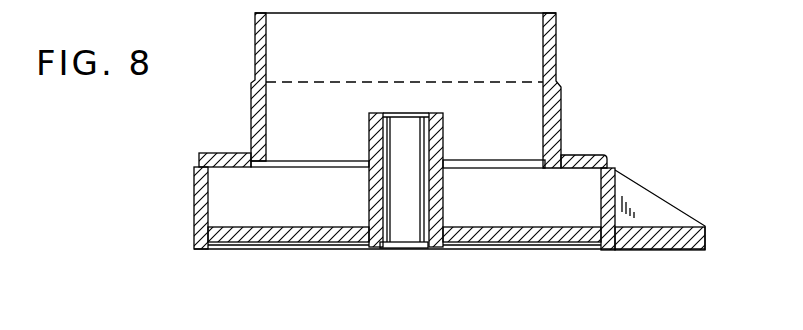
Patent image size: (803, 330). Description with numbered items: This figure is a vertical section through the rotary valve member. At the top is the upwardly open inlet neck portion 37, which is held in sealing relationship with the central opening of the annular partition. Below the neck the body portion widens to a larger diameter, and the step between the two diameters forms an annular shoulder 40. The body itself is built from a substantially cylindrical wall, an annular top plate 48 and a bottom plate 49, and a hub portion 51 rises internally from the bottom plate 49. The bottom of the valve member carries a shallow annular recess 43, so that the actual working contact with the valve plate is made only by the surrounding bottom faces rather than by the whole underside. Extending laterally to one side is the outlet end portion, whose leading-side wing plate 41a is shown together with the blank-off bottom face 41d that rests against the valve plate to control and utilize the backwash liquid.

The inlet neck portion 37 is at (265, 104).
The annular shoulder 40 is at (585, 156).
The wing plate 41a is at (657, 226).
The blank-off bottom face 41d is at (663, 250).
The shallow annular recess 43 is at (530, 246).
The annular top plate 48 is at (238, 158).
The bottom plate 49 is at (325, 232).
The hub portion 51 is at (444, 143).